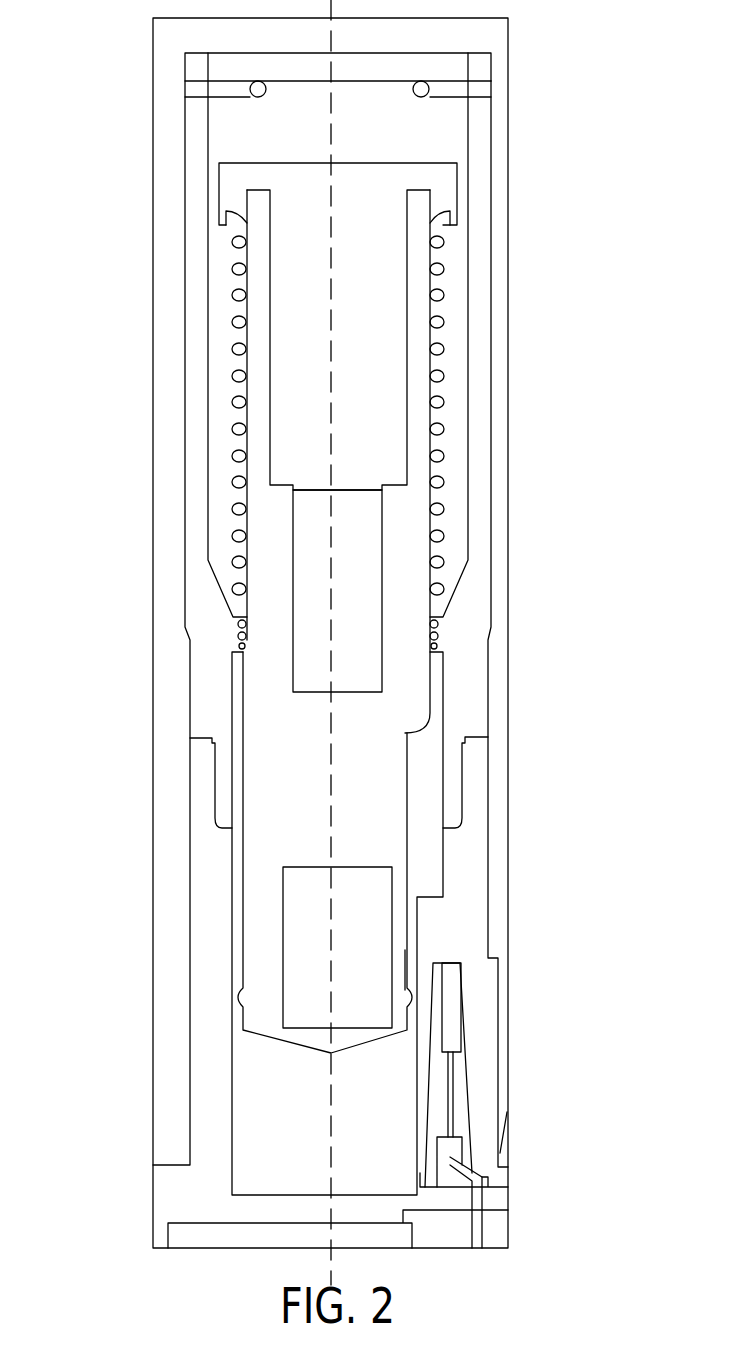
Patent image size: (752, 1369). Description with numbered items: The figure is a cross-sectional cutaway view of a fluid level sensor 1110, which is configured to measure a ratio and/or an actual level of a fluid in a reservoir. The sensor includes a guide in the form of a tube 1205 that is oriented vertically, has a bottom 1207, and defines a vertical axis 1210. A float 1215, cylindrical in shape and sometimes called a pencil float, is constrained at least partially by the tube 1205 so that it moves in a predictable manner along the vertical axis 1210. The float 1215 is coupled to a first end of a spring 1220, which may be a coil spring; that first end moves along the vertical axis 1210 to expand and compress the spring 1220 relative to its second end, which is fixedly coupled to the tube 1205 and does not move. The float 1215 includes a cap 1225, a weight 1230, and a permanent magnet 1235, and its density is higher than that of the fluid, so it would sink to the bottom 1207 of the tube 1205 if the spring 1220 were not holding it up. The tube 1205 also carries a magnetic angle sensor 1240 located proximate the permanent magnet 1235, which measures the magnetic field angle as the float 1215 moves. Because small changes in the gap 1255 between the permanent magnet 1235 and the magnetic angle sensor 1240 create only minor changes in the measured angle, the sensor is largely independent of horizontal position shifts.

The fluid level sensor 1110 is at (108, 60).
The tube 1205 is at (197, 115).
The vertical axis 1210 is at (331, 122).
The cap 1225 is at (295, 292).
The spring 1220 is at (237, 375).
The weight 1230 is at (370, 624).
The float 1215 is at (265, 713).
The gap 1255 is at (407, 990).
The permanent magnet 1235 is at (300, 938).
The magnetic angle sensor 1240 is at (450, 1012).
The bottom 1207 is at (250, 1195).